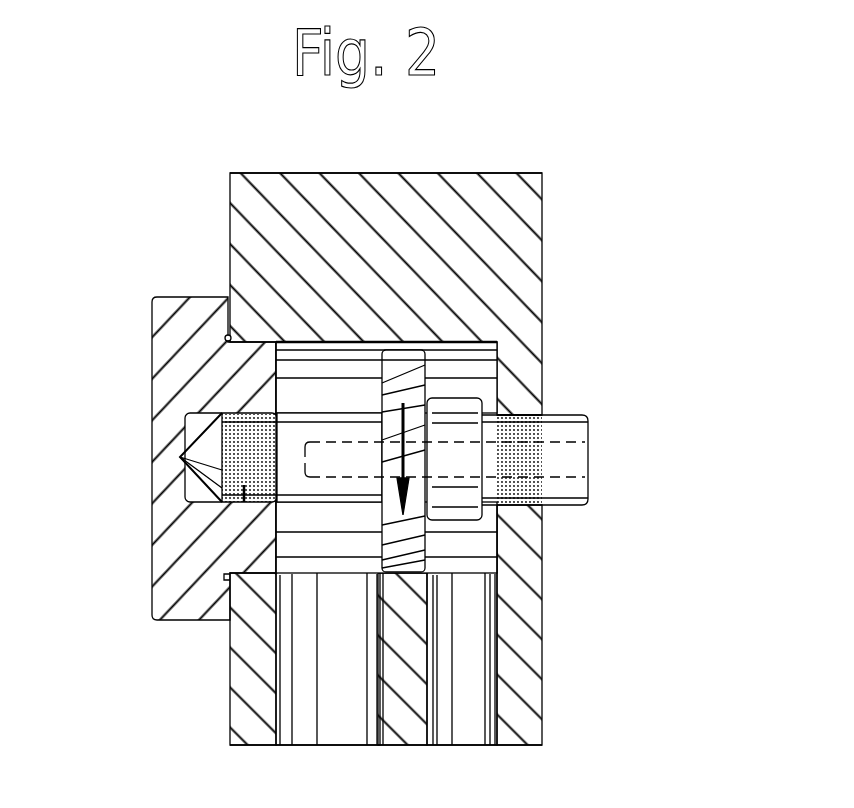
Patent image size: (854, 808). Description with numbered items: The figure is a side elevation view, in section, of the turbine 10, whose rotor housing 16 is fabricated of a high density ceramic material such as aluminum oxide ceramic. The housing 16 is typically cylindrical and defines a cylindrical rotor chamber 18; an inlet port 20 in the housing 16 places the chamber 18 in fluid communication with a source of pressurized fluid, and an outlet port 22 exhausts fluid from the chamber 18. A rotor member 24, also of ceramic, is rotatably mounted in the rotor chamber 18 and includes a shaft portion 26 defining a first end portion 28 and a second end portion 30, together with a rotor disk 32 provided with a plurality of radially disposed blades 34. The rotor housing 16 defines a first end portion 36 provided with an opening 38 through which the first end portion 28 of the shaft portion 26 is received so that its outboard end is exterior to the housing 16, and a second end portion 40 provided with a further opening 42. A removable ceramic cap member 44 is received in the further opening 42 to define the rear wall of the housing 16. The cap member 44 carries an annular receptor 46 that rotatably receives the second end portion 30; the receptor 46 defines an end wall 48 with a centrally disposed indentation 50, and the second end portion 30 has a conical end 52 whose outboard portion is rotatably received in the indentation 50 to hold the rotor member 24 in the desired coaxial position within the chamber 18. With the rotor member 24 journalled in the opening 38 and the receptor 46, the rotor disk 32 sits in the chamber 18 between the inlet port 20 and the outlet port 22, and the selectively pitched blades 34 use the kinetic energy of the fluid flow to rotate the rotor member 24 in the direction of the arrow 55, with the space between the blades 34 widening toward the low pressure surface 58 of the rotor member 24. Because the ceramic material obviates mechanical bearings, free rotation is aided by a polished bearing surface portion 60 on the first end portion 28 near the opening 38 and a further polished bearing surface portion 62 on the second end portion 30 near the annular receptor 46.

The turbine 10 is at (650, 197).
The rotor housing 16 is at (542, 225).
The rotor chamber 18 is at (310, 372).
The inlet port 20 is at (467, 718).
The outlet port 22 is at (325, 697).
The rotor member 24 is at (450, 385).
The shaft portion 26 is at (327, 504).
The first end portion 28 is at (578, 415).
The second end portion 30 is at (240, 413).
The rotor disk 32 is at (403, 362).
The blades 34 is at (308, 372).
The first end portion 36 is at (542, 623).
The opening 38 is at (545, 413).
The second end portion 40 is at (230, 188).
The further opening 42 is at (279, 402).
The cap member 44 is at (183, 620).
The annular receptor 46 is at (280, 412).
The end wall 48 is at (210, 420).
The indentation 50 is at (170, 470).
The conical end 52 is at (180, 457).
The arrow 55 is at (515, 468).
The low pressure surface 58 is at (346, 546).
The polished bearing surface portion 60 is at (525, 453).
The polished bearing surface portion 62 is at (243, 492).